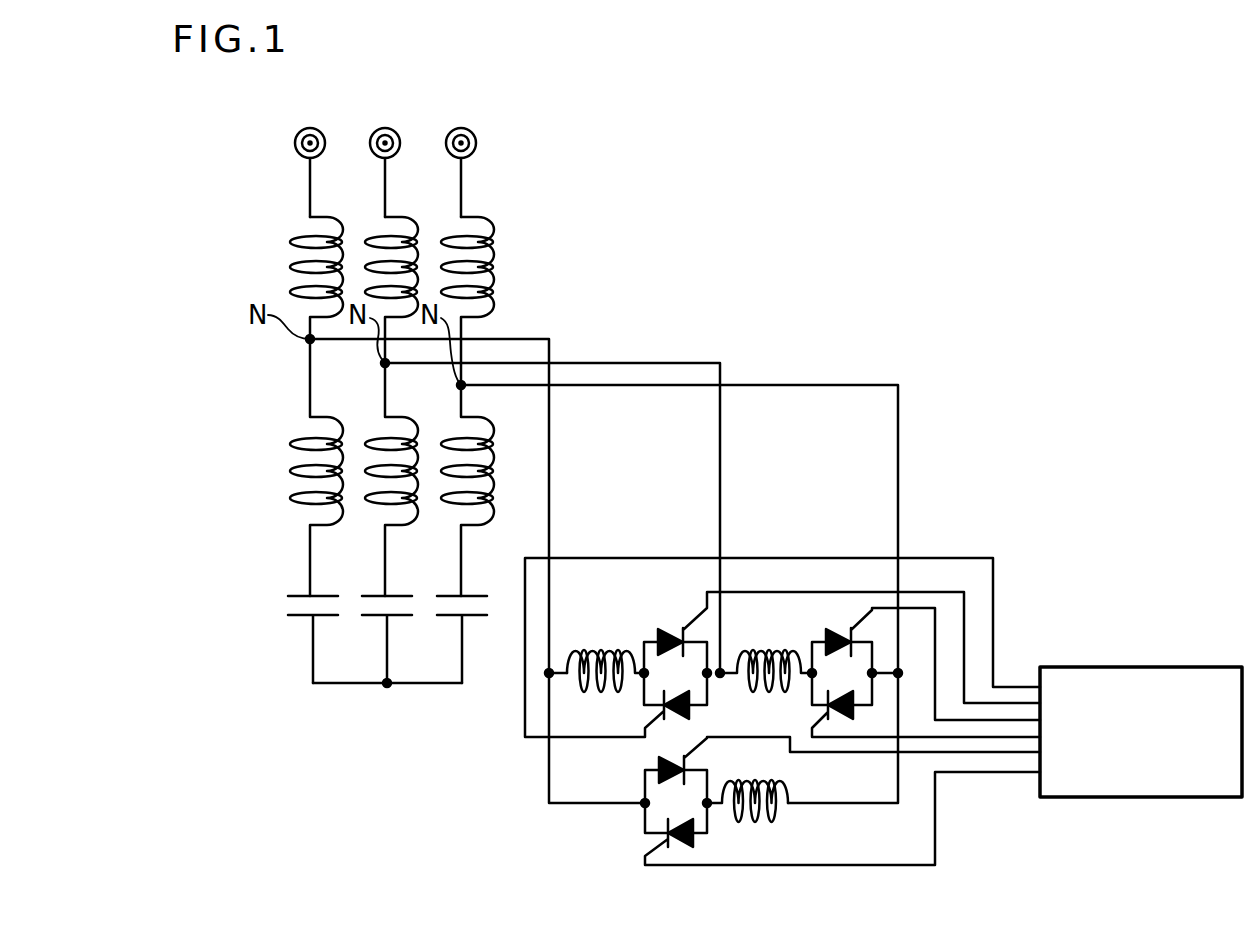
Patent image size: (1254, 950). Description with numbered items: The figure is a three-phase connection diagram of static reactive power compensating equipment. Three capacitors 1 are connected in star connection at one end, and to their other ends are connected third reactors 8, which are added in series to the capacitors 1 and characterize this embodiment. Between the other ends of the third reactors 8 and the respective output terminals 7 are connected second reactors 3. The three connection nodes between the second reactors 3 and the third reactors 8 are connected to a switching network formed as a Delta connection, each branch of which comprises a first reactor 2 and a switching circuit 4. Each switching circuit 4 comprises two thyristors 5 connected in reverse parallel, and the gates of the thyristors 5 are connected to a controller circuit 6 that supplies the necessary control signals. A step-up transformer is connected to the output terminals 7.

The capacitor 1 is at (305, 593).
The first reactor 2 is at (586, 646).
The second reactor 3 is at (328, 215).
The switching circuit 4 is at (644, 657).
The thyristor 5 is at (670, 633).
The controller circuit 6 is at (1167, 667).
The output terminal 7 is at (460, 128).
The third reactor 8 is at (322, 415).